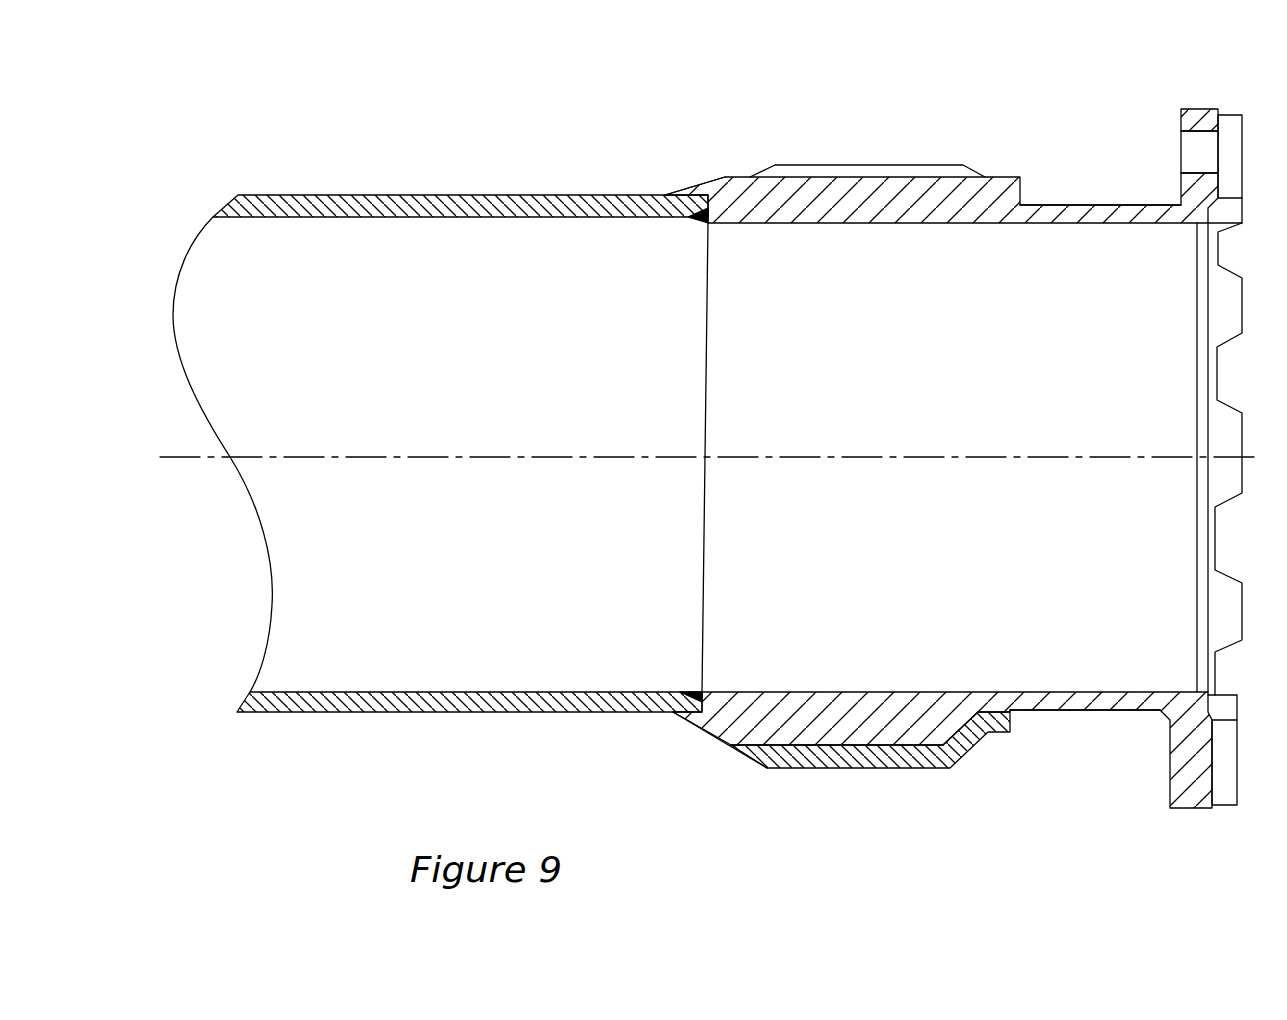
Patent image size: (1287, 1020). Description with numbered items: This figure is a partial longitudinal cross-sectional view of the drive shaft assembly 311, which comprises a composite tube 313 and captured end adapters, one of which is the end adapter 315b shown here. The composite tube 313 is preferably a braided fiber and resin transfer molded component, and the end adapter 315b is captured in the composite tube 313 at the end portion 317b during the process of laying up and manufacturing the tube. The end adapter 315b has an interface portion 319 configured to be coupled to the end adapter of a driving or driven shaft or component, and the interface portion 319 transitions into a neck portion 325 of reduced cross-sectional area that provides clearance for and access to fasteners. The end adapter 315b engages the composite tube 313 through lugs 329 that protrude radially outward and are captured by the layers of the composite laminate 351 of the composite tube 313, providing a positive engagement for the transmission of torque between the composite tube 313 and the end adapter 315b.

The drive shaft assembly 311 is at (333, 153).
The composite tube 313 is at (417, 195).
The end adapter 315b is at (1082, 150).
The end portion 317b is at (881, 772).
The interface portion 319 is at (1196, 108).
The neck portion 325 is at (1082, 710).
The lug 329 is at (765, 728).
The composite laminate 351 is at (817, 165).